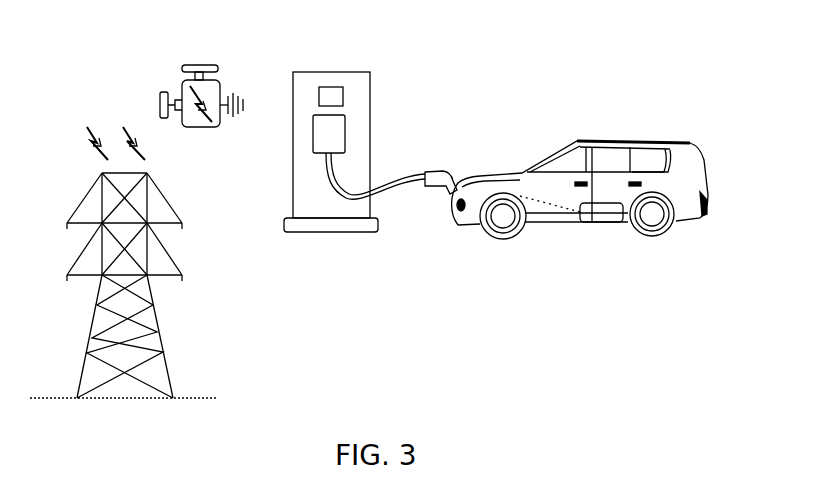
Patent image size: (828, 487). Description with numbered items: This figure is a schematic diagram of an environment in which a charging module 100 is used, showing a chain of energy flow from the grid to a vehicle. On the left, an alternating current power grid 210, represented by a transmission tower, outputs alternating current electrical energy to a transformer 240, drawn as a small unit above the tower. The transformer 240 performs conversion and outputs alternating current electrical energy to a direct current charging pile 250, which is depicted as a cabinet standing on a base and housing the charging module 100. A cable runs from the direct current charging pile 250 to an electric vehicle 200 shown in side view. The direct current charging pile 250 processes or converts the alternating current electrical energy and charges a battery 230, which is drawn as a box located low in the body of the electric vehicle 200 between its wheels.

The charging module 100 is at (345, 97).
The electric vehicle 200 is at (580, 185).
The alternating current power grid 210 is at (180, 370).
The battery 230 is at (603, 223).
The transformer 240 is at (197, 63).
The direct current charging pile 250 is at (370, 137).